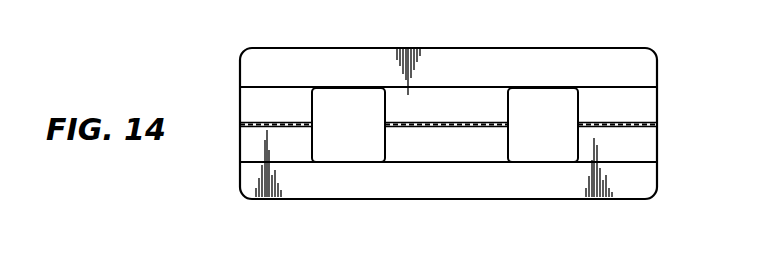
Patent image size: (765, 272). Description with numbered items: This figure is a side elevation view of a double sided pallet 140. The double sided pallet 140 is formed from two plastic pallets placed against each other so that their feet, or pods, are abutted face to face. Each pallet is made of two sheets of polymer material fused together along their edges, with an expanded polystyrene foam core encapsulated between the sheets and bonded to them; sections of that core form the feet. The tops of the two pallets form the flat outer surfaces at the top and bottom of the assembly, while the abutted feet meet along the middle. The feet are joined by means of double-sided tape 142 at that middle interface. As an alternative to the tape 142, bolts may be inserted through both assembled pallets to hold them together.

The double sided pallet 140 is at (232, 108).
The double-sided tape 142 is at (473, 122).